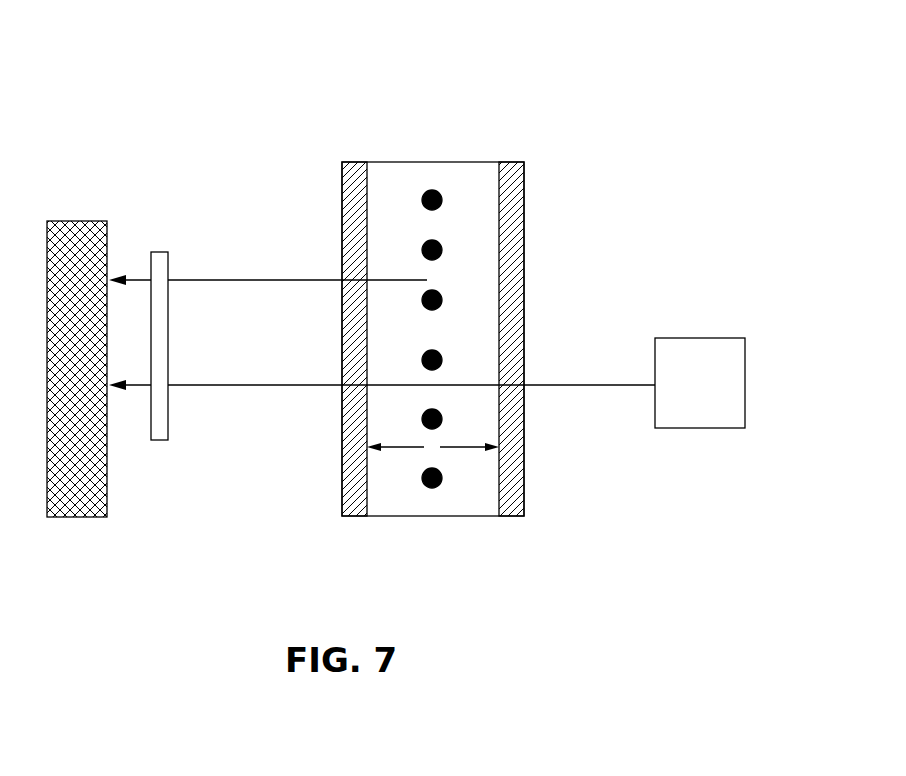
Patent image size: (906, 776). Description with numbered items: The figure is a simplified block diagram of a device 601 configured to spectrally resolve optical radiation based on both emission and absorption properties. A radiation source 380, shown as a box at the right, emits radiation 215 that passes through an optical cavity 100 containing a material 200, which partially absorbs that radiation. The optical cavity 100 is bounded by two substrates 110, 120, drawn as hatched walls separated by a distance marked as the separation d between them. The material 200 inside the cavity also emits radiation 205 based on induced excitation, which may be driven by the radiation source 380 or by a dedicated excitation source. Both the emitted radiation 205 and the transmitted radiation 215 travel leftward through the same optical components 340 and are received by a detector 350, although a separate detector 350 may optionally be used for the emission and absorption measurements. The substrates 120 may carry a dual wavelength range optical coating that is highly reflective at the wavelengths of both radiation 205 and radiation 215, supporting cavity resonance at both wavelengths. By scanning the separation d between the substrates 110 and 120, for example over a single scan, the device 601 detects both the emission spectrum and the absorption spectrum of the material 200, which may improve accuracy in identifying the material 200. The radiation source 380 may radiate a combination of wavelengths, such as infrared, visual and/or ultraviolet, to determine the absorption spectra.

The optical cavity 100 is at (463, 162).
The substrate 110 is at (525, 220).
The substrate 120 is at (368, 190).
The material 200 is at (442, 358).
The radiation 205 is at (203, 280).
The radiation 215 is at (203, 385).
The optical components 340 is at (168, 252).
The detector 350 is at (90, 221).
The radiation source 380 is at (690, 338).
The device 601 is at (672, 102).
The separation d is at (433, 447).